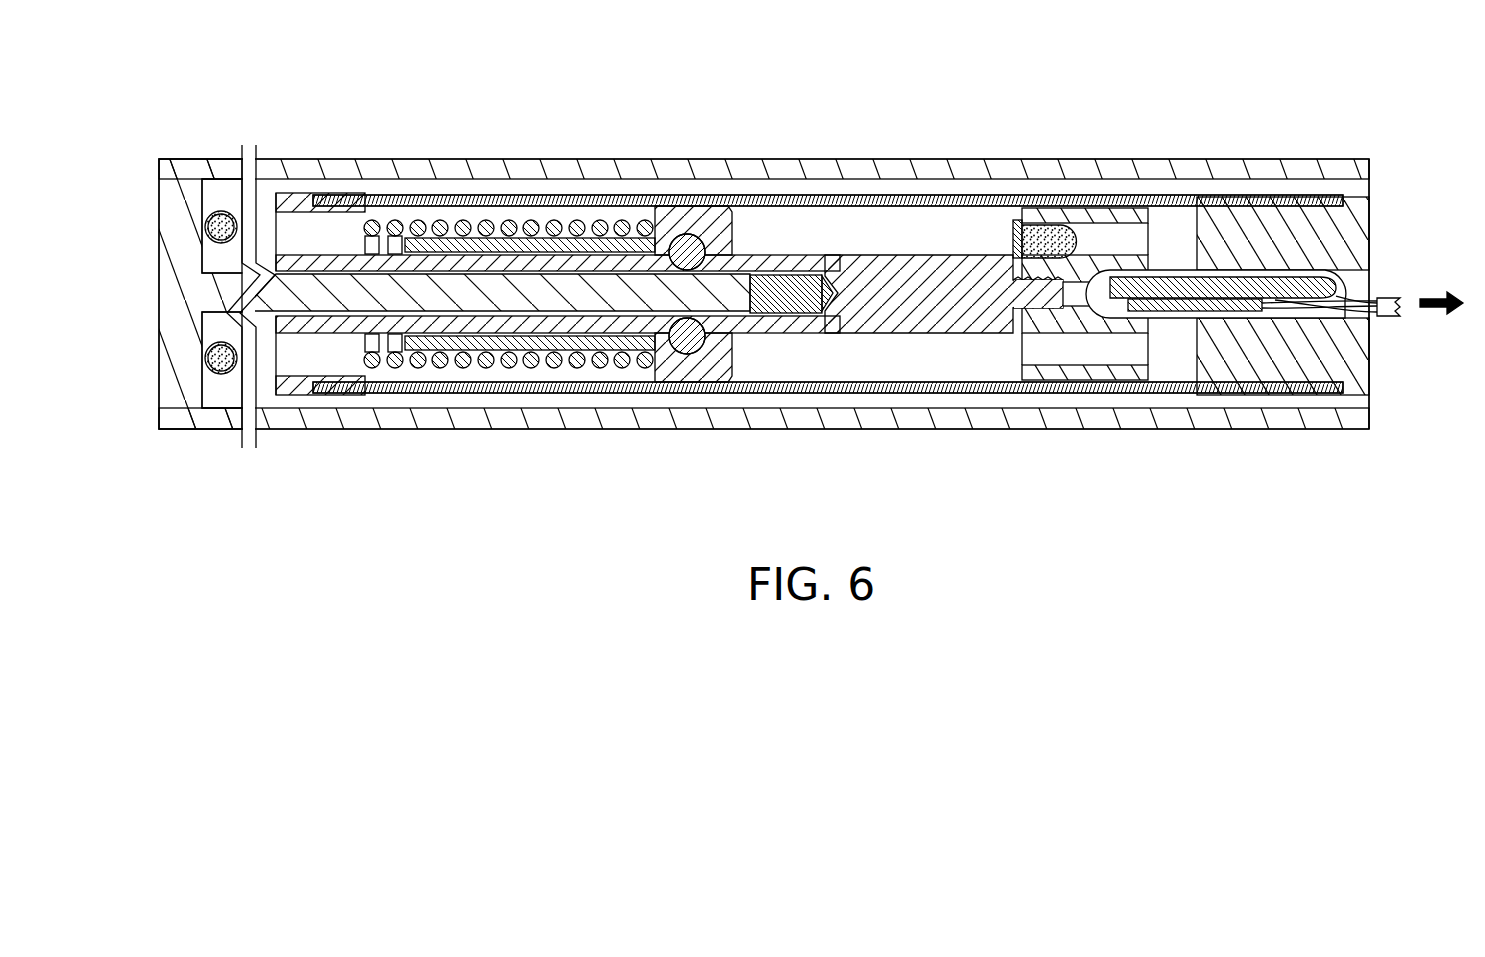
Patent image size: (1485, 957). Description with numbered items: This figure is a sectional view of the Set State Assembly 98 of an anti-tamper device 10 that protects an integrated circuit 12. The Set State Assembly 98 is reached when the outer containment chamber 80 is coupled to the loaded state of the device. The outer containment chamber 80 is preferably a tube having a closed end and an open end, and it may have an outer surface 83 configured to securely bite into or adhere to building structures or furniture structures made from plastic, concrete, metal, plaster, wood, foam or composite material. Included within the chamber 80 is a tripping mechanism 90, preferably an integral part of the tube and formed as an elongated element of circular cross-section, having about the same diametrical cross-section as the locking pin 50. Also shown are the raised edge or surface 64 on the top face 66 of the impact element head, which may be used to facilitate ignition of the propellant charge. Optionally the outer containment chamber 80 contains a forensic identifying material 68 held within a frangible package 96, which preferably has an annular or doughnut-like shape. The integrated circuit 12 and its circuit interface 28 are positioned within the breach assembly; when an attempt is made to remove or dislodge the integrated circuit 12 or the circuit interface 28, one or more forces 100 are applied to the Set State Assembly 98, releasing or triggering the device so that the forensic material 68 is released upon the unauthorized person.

The anti-tamper device 10 is at (1275, 110).
The integrated circuit 12 is at (1177, 312).
The circuit interface 28 is at (1325, 291).
The locking pin 50 is at (787, 290).
The raised edge or surface 64 is at (735, 213).
The top face 66 is at (750, 367).
The forensic identifying material 68 is at (217, 356).
The outer containment chamber 80 is at (509, 158).
The outer surface 83 is at (1078, 430).
The tripping mechanism 90 is at (310, 293).
The frangible package 96 is at (218, 354).
The Set State Assembly 98 is at (410, 442).
The forces 100 is at (1437, 296).